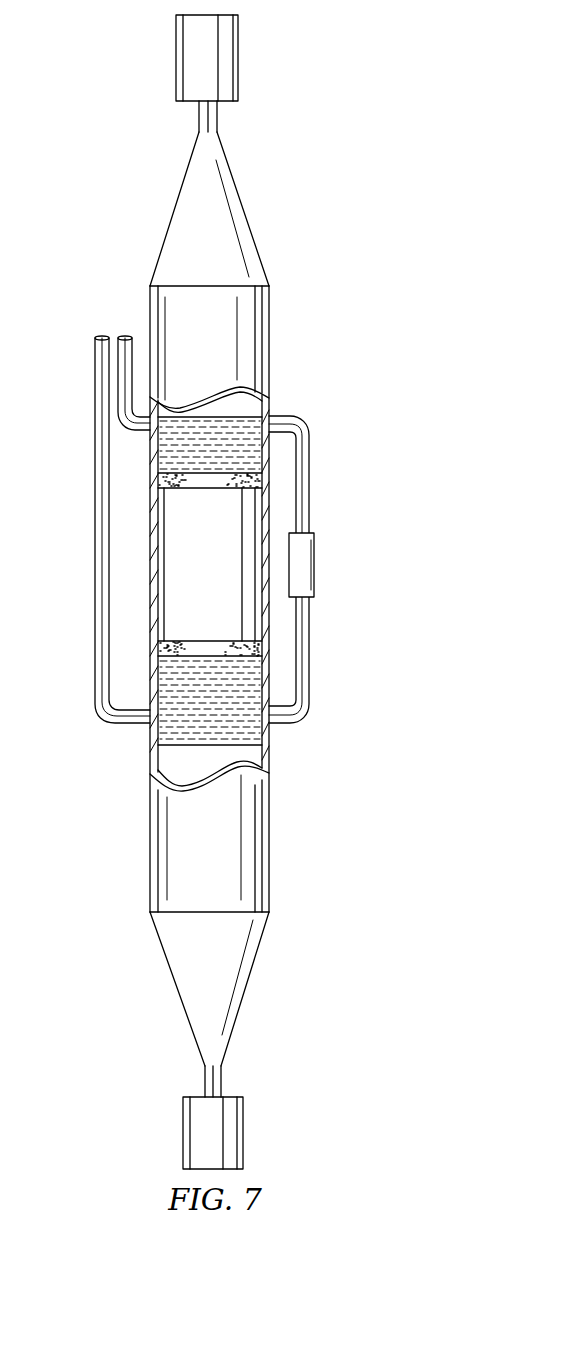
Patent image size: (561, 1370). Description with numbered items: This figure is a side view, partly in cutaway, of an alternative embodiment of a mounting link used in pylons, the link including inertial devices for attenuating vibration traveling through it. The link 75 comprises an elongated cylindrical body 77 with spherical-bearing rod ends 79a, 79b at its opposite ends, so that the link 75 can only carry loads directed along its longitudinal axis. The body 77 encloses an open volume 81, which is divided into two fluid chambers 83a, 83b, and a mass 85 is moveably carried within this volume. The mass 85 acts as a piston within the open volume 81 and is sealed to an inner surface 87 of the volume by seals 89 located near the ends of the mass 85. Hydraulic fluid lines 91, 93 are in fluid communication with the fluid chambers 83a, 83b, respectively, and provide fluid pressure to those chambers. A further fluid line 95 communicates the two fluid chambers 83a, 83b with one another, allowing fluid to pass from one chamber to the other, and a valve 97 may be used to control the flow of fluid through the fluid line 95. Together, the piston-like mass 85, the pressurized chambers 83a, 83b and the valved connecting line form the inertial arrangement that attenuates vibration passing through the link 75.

The link 75 is at (125, 88).
The elongated cylindrical body 77 is at (270, 350).
The spherical-bearing rod end 79a is at (239, 58).
The spherical-bearing rod end 79b is at (245, 1132).
The open volume 81 is at (244, 727).
The fluid chamber 83a is at (242, 449).
The fluid chamber 83b is at (180, 730).
The mass 85 is at (199, 578).
The inner surface 87 is at (160, 552).
The seals 89 is at (258, 479).
The hydraulic fluid line 91 is at (142, 433).
The hydraulic fluid line 93 is at (94, 592).
The fluid line 95 is at (311, 660).
The valve 97 is at (316, 565).